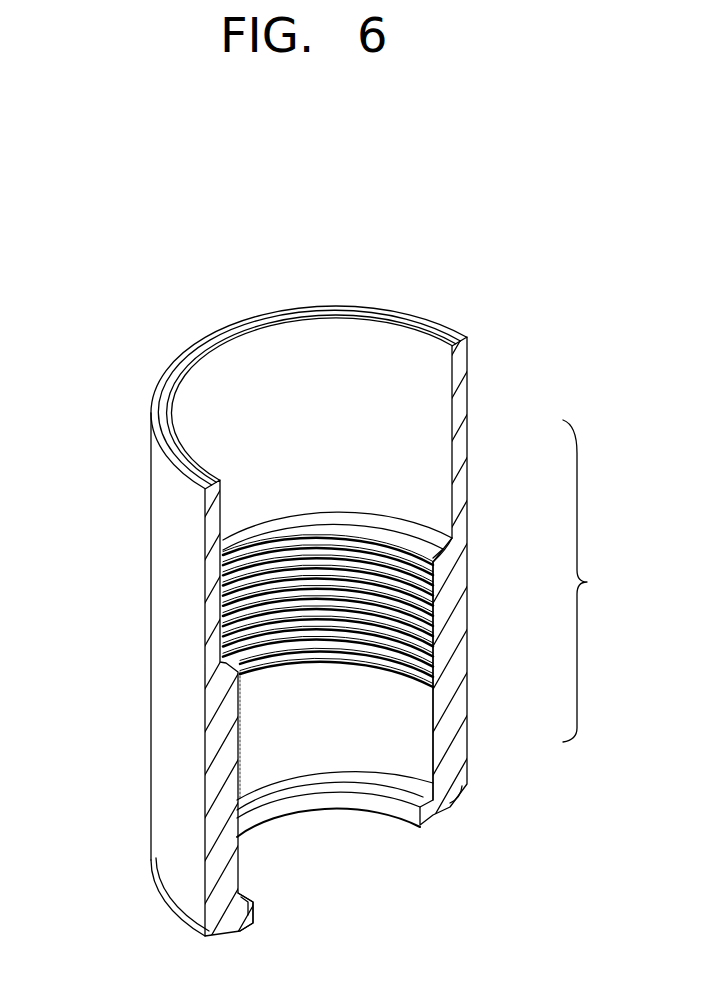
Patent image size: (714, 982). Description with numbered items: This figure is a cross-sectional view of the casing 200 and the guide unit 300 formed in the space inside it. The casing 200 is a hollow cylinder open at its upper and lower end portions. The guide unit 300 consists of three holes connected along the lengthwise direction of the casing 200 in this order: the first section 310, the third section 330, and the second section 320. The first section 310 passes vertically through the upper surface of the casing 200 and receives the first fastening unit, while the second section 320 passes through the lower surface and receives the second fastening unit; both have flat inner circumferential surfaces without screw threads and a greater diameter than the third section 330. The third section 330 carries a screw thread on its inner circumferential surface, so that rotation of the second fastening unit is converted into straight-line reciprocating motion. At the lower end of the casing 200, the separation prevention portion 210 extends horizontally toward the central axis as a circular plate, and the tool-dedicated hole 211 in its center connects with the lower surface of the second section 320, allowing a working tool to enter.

The casing 200 is at (180, 587).
The separation prevention portion 210 is at (432, 812).
The tool-dedicated hole 211 is at (357, 847).
The guide unit 300 is at (601, 581).
The first section 310 is at (347, 423).
The second section 320 is at (347, 713).
The third section 330 is at (347, 590).